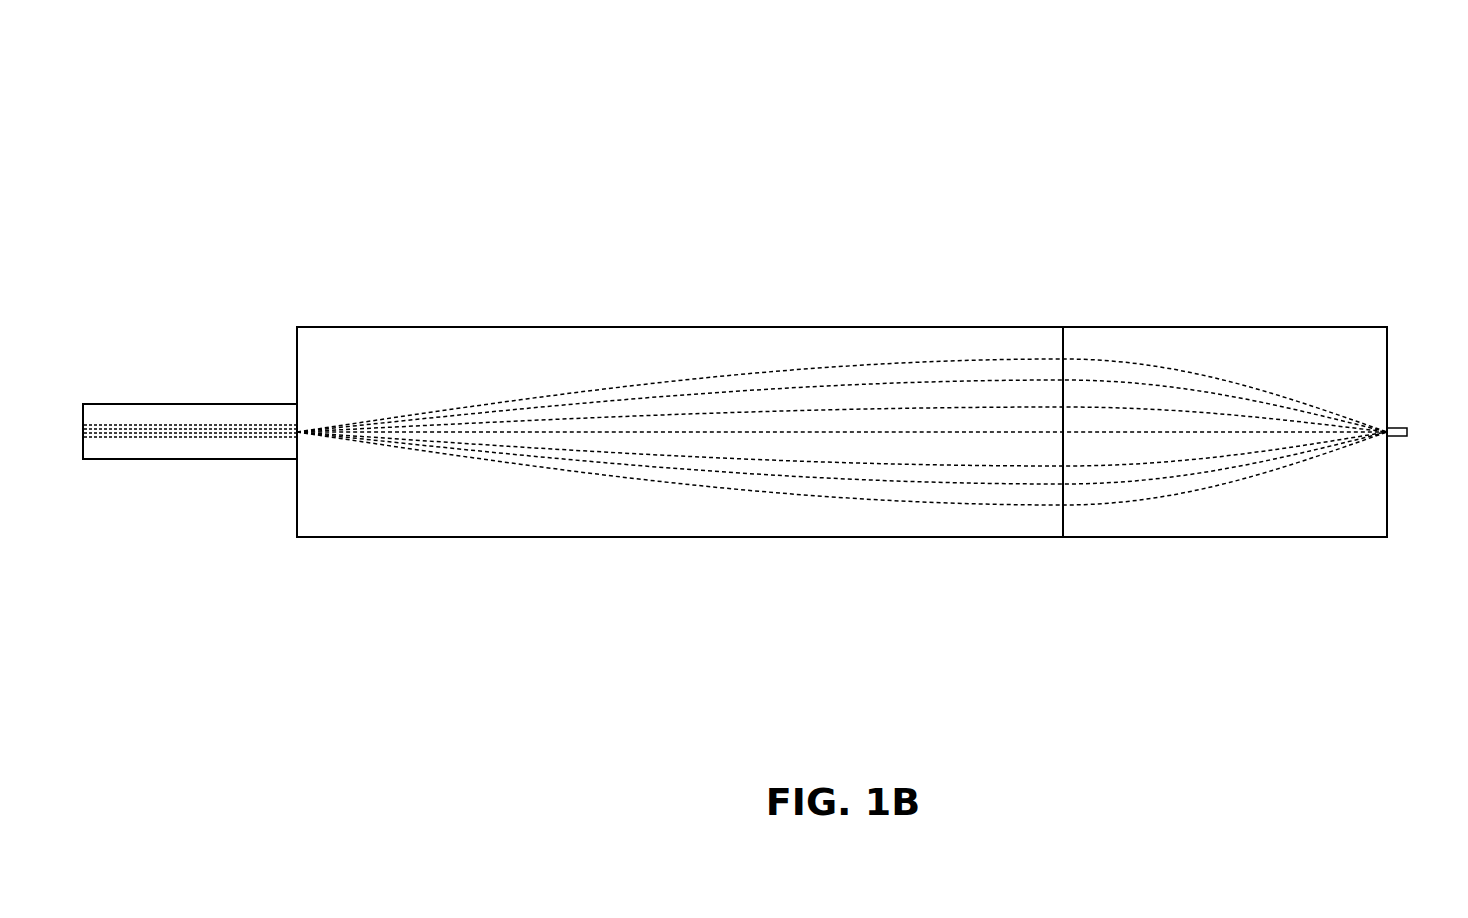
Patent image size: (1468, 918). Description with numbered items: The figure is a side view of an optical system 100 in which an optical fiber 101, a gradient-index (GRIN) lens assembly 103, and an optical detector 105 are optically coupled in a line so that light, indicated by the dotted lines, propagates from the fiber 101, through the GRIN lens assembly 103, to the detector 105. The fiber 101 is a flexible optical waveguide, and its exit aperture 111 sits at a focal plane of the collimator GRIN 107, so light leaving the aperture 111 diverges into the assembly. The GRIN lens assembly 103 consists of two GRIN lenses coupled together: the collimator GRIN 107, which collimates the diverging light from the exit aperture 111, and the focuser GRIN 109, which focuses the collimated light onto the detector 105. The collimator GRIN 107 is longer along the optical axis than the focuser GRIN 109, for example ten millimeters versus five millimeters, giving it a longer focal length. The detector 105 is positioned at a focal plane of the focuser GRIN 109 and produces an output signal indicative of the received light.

The optical system 100 is at (800, 81).
The optical fiber 101 is at (184, 404).
The gradient-index (GRIN) lens assembly 103 is at (297, 297).
The optical detector 105 is at (1398, 428).
The collimator GRIN 107 is at (680, 537).
The focuser GRIN 109 is at (1248, 537).
The exit aperture 111 is at (297, 460).